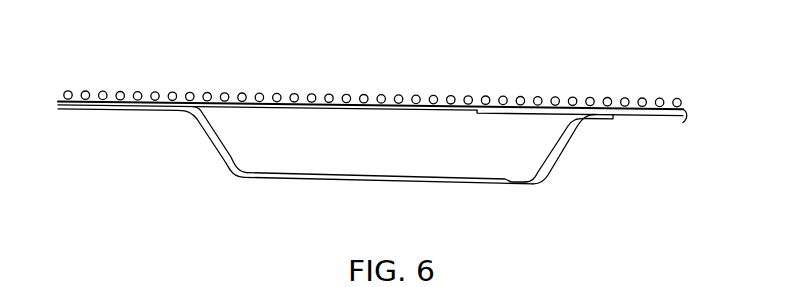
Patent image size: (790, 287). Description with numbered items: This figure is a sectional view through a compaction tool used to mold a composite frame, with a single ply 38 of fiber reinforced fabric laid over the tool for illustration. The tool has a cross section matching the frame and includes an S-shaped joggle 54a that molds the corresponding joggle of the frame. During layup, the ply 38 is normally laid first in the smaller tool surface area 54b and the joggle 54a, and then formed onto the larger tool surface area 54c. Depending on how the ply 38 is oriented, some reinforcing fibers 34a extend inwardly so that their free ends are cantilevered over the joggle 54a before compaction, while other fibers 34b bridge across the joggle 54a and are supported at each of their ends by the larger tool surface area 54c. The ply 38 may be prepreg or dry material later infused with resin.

The ply 38 is at (372, 130).
The reinforcing fibers 34a is at (484, 96).
The fibers 34b is at (355, 107).
The joggle 54a is at (238, 140).
The smaller tool surface area 54b is at (510, 184).
The larger tool surface area 54c is at (620, 117).